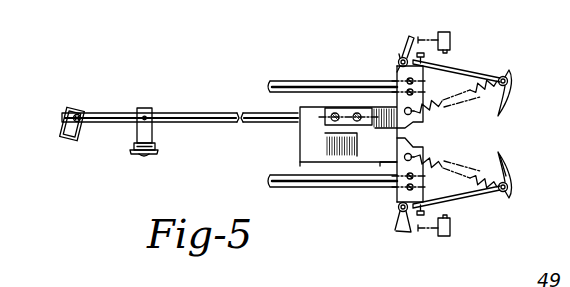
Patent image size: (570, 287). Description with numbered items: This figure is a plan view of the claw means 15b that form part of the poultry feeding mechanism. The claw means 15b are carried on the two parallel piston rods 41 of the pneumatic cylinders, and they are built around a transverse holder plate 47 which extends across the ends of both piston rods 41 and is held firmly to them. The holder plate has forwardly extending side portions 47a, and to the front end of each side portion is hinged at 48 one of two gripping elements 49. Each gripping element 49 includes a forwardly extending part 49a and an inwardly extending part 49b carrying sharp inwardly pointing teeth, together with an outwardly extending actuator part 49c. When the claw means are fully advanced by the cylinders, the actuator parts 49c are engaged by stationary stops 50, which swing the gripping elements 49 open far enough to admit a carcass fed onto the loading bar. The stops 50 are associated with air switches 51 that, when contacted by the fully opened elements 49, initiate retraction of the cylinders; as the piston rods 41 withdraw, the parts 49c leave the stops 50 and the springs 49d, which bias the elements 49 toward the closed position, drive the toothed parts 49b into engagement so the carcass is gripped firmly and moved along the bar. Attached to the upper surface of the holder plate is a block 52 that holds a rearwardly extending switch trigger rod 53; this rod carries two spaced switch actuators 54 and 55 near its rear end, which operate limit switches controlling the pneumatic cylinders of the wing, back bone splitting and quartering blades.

The claw means 15b is at (483, 96).
The piston rods 41 is at (336, 72).
The transverse holder plate 47 is at (297, 153).
The forwardly extending side portions 47a is at (378, 157).
The hinge 48 is at (402, 58).
The gripping elements 49 is at (468, 72).
The forwardly extending part 49a is at (494, 73).
The inwardly extending part 49b is at (509, 95).
The outwardly extending actuator parts 49c is at (412, 37).
The springs 49d is at (507, 178).
The stationary stops 50 is at (446, 32).
The air switches 51 is at (451, 34).
The block 52 is at (333, 125).
The switch trigger rod 53 is at (209, 112).
The switch actuator 54 is at (80, 107).
The switch actuator 55 is at (150, 108).